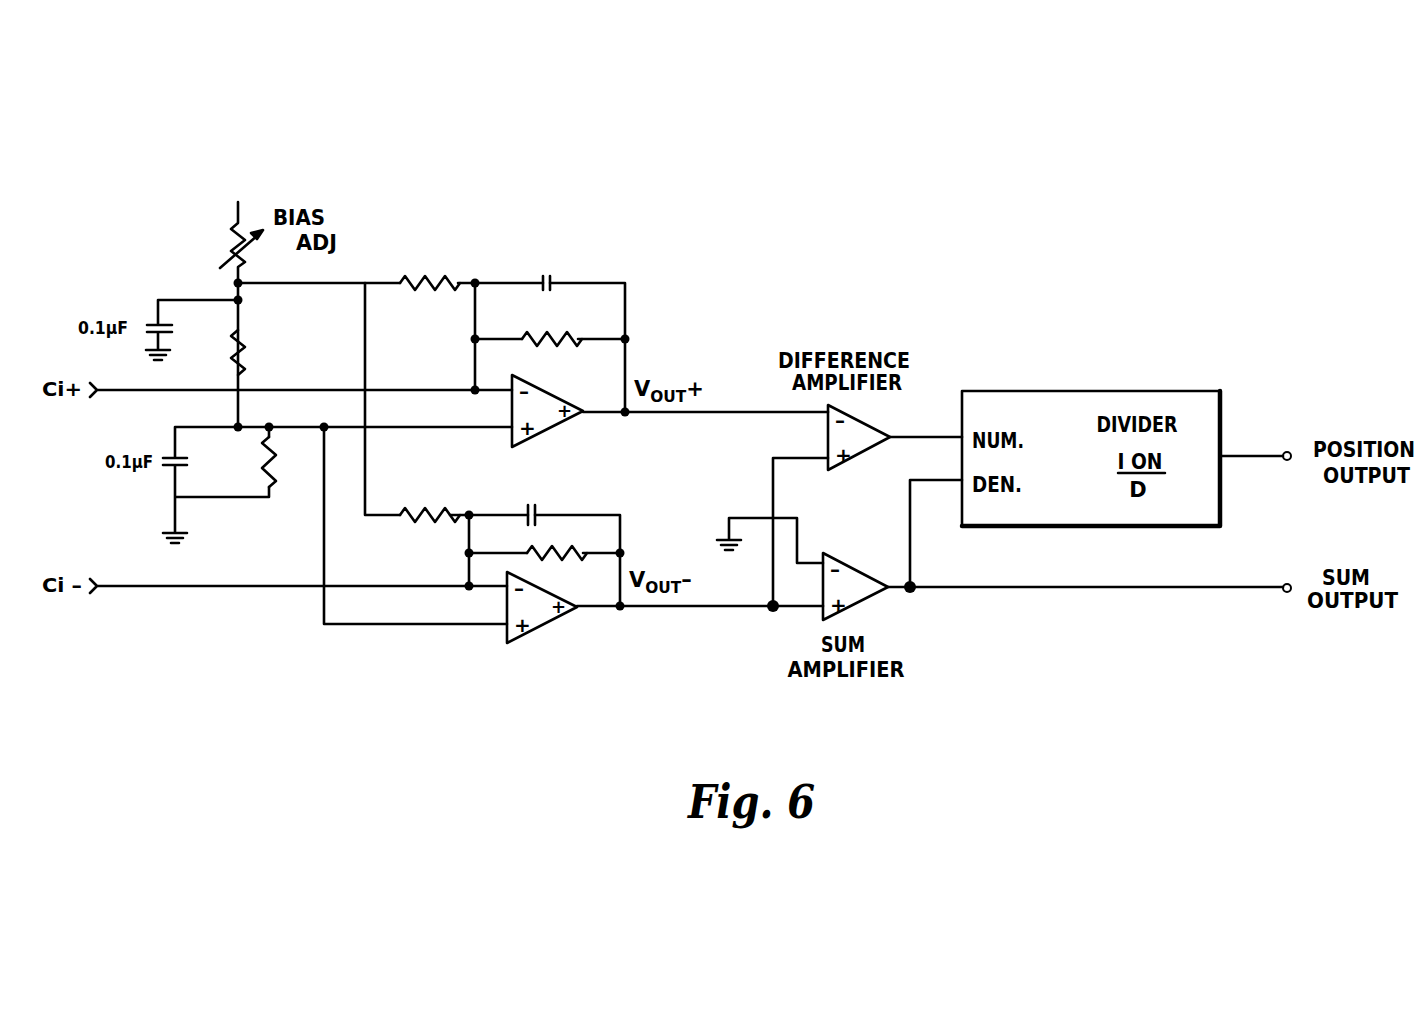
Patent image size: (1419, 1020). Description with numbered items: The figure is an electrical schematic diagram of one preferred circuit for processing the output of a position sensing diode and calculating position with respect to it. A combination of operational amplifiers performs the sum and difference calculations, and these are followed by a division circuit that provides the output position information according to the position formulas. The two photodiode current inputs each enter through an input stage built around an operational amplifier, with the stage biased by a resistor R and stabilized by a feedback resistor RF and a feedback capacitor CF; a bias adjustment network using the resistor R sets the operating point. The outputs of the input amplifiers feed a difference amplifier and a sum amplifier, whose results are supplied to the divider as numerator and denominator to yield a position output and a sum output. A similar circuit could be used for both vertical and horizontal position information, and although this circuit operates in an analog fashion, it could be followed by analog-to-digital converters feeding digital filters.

The bias resistor R is at (264, 408).
The feedback resistor RF is at (493, 406).
The feedback capacitor CF is at (534, 388).